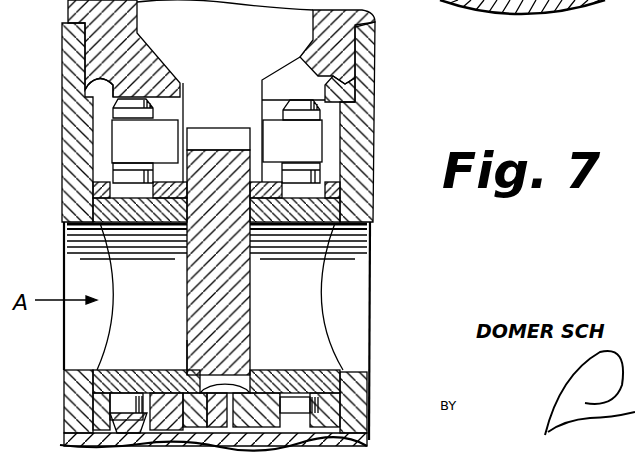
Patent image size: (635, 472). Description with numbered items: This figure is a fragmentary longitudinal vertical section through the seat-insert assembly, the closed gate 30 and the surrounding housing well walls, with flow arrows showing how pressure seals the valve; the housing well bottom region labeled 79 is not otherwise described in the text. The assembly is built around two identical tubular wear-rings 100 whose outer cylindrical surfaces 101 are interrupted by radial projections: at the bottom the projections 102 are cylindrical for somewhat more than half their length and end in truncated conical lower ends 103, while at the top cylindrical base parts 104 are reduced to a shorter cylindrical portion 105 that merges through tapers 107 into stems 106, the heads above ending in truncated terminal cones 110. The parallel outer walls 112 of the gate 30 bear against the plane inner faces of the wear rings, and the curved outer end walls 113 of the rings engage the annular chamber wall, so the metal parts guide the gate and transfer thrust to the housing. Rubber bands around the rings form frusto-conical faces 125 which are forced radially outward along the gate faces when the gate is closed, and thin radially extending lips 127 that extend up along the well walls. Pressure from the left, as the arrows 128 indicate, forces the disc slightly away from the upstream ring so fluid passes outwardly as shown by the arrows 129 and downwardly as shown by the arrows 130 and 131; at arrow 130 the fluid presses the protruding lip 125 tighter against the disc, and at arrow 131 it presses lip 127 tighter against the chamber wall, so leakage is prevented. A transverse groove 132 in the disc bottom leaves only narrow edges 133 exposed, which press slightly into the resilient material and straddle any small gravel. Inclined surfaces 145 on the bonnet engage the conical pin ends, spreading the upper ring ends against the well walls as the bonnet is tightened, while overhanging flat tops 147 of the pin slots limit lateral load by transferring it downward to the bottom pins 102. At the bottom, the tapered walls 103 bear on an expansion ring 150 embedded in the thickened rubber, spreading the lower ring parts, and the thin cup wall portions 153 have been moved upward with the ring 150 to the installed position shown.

The gate 30 is at (250, 290).
The bottom plate 79 is at (362, 443).
The tubular wear-ring 100 is at (150, 321).
The outer cylindrical surface 101 is at (372, 217).
The bottom projection 102 is at (345, 372).
The truncated conical lower end 103 is at (108, 420).
The cylindrical base part 104 is at (110, 198).
The reduced cylindrical portion 105 is at (112, 166).
The stem 106 is at (350, 145).
The taper 107 is at (120, 144).
The truncated terminal cone 110 is at (85, 97).
The outer wall of gate 112 is at (246, 315).
The curved outer end wall 113 is at (325, 308).
The frusto-conical face 125 is at (264, 158).
The radially extending lip 127 is at (87, 173).
The flow arrows 128 is at (187, 242).
The flow arrows 129 is at (213, 117).
The flow arrow 130 is at (240, 128).
The flow arrow 131 is at (372, 140).
The transverse groove 132 is at (187, 347).
The narrow edge 133 is at (205, 385).
The inclined surface 145 is at (183, 80).
The overhanging flat top 147 is at (163, 68).
The expansion ring 150 is at (67, 432).
The thin cup wall portion 153 is at (67, 442).